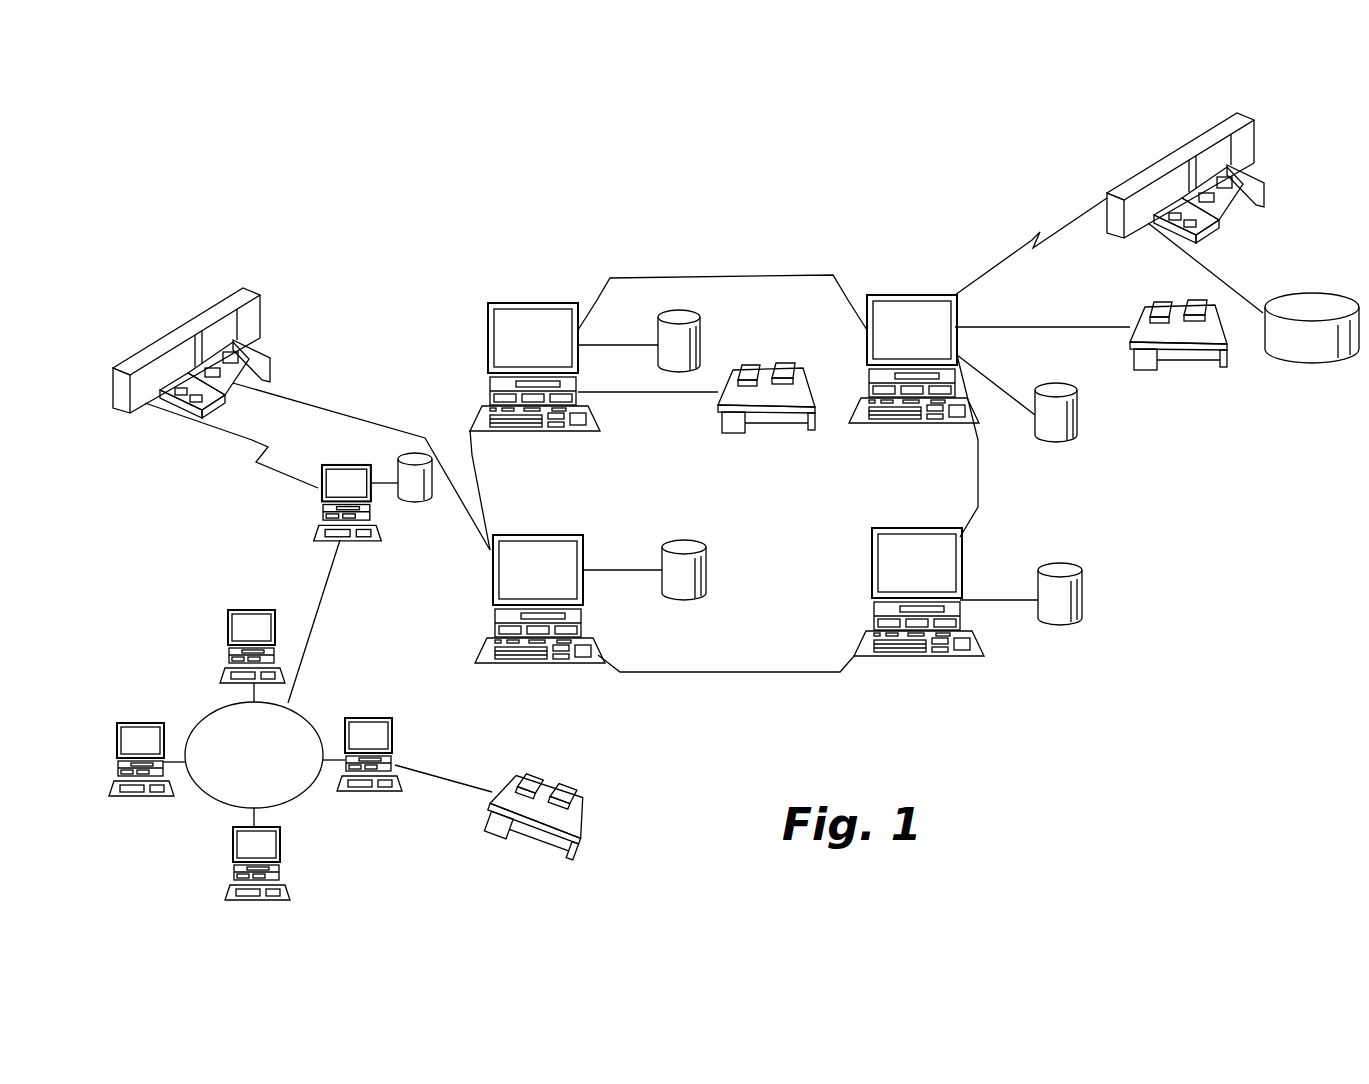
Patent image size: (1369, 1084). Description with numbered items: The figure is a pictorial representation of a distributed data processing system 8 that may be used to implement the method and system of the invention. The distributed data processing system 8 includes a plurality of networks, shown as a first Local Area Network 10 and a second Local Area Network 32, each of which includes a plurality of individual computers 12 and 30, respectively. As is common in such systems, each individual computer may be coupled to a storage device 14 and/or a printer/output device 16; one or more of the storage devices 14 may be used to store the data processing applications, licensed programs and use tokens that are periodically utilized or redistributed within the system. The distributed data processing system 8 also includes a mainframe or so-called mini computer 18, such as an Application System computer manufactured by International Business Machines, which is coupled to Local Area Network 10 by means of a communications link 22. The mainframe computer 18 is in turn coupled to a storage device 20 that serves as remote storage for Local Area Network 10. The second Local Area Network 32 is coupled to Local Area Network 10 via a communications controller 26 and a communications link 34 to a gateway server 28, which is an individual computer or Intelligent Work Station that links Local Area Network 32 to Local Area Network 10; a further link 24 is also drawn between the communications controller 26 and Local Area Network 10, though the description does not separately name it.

The distributed data processing system 8 is at (750, 240).
The Local Area Network 10 is at (757, 672).
The individual computers 12 is at (553, 277).
The storage device 14 is at (700, 322).
The printer/output device 16 is at (763, 372).
The mainframe computer 18 is at (1178, 150).
The storage device 20 is at (1333, 295).
The communications link 22 is at (1060, 205).
The communications link 24 is at (348, 414).
The communications controller 26 is at (258, 290).
The gateway server 28 is at (346, 465).
The individual computers 30 is at (262, 580).
The Local Area Network 32 is at (210, 800).
The communications link 34 is at (265, 468).